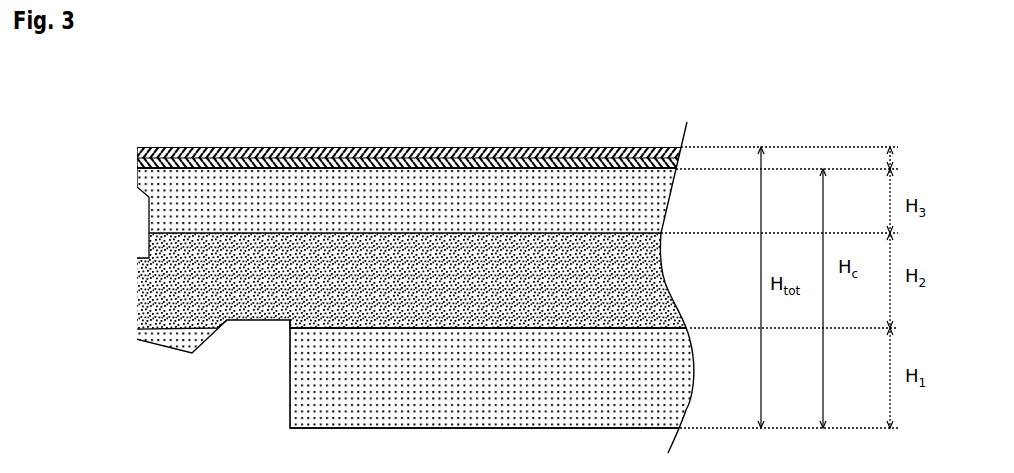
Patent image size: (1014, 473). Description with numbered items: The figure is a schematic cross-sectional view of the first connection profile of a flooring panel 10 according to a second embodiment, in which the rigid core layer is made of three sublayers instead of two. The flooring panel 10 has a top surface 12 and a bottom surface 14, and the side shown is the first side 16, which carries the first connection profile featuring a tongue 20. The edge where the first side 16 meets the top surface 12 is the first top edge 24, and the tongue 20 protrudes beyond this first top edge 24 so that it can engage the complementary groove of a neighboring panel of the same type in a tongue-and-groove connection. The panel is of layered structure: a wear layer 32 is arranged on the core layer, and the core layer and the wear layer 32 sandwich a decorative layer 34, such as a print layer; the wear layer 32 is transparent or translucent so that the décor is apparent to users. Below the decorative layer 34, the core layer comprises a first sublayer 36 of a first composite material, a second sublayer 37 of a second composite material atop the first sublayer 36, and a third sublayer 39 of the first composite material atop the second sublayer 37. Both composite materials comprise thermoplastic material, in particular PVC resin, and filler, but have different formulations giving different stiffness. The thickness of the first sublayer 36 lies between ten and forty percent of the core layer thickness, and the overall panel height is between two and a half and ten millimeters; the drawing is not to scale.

The flooring panel 10 is at (407, 262).
The top surface 12 is at (426, 127).
The bottom surface 14 is at (424, 428).
The first side 16 is at (375, 284).
The tongue 20 is at (22, 313).
The first top edge 24 is at (137, 148).
The wear layer 32 is at (637, 147).
The decorative layer 34 is at (677, 169).
The first sublayer 36 is at (687, 375).
The second sublayer 37 is at (648, 282).
The third sublayer 39 is at (647, 212).